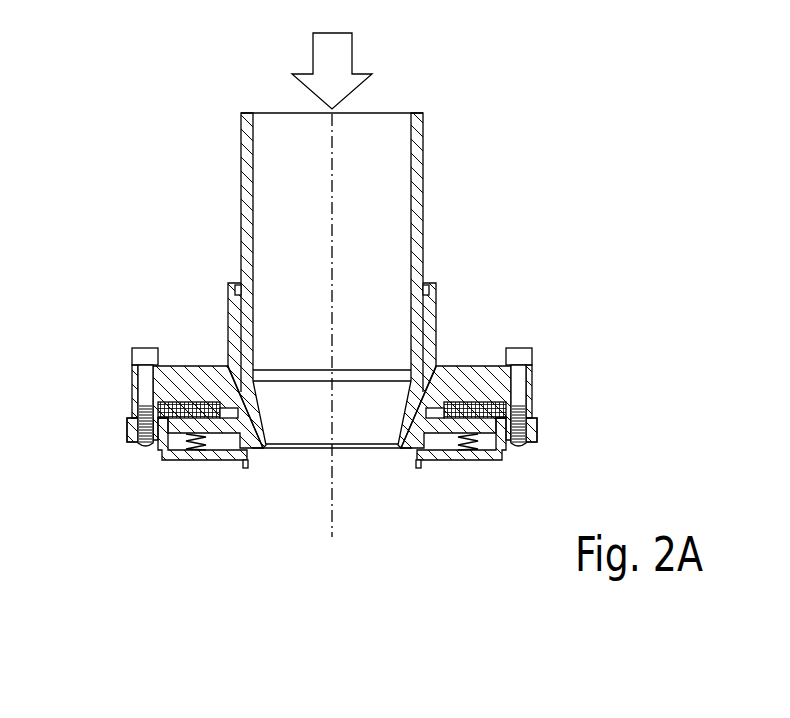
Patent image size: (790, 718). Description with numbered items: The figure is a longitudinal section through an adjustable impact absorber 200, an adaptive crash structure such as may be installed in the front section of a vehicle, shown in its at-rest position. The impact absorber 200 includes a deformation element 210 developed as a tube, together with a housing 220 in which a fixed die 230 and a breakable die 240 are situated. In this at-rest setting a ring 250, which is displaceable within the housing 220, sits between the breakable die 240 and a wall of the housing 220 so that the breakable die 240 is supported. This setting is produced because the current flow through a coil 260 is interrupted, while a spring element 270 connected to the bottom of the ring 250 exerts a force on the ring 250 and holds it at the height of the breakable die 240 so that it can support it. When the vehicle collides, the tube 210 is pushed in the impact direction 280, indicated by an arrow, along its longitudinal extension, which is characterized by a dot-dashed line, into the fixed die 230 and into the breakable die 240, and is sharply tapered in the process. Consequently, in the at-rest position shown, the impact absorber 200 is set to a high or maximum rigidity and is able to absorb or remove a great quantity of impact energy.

The adjustable impact absorber 200 is at (135, 126).
The deformation element 210 is at (267, 244).
The housing 220 is at (548, 394).
The fixed die 230 is at (438, 388).
The breakable die 240 is at (425, 432).
The ring 250 is at (165, 440).
The coil 260 is at (188, 402).
The spring element 270 is at (200, 450).
The impact direction 280 is at (313, 52).